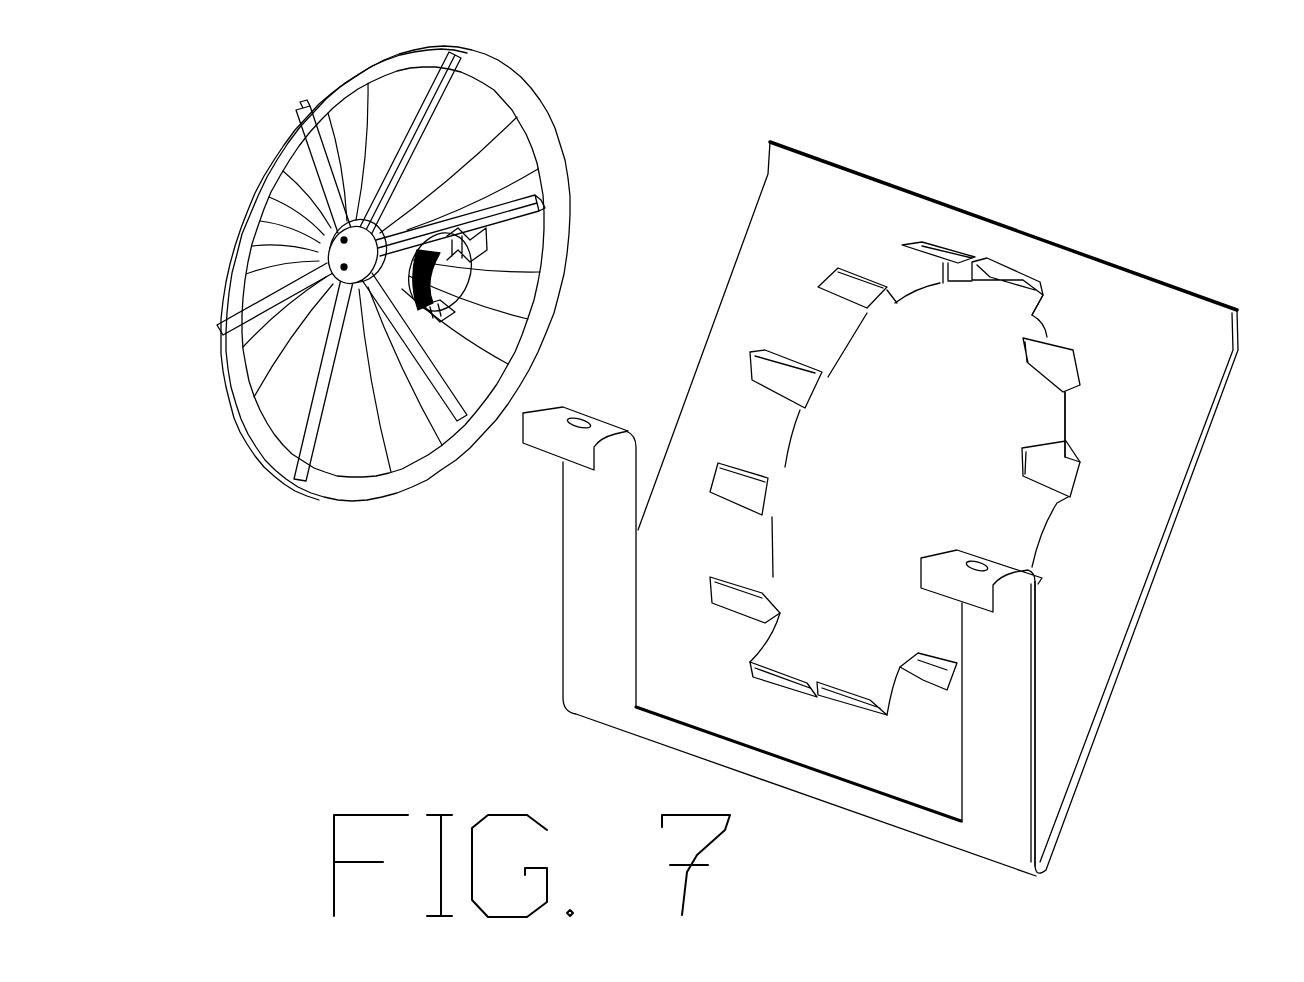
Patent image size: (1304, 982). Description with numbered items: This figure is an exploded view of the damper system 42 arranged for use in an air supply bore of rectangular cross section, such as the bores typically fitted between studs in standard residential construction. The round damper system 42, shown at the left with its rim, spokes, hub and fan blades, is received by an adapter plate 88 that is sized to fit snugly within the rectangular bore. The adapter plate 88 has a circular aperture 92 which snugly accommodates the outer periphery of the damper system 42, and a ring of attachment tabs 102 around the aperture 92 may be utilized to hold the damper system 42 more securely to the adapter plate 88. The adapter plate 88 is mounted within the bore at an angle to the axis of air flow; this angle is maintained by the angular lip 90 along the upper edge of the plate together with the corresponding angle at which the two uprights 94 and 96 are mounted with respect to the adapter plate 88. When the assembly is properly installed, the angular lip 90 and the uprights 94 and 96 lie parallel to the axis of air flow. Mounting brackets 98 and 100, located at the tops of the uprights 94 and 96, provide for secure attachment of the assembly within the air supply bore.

The damper system 42 is at (548, 172).
The adapter plate 88 is at (830, 197).
The angular lip 90 is at (897, 192).
The circular aperture 92 is at (993, 347).
The upright 94 is at (584, 644).
The upright 96 is at (991, 746).
The mounting bracket 98 is at (550, 420).
The mounting bracket 100 is at (960, 562).
The attachment tabs 102 is at (1027, 460).